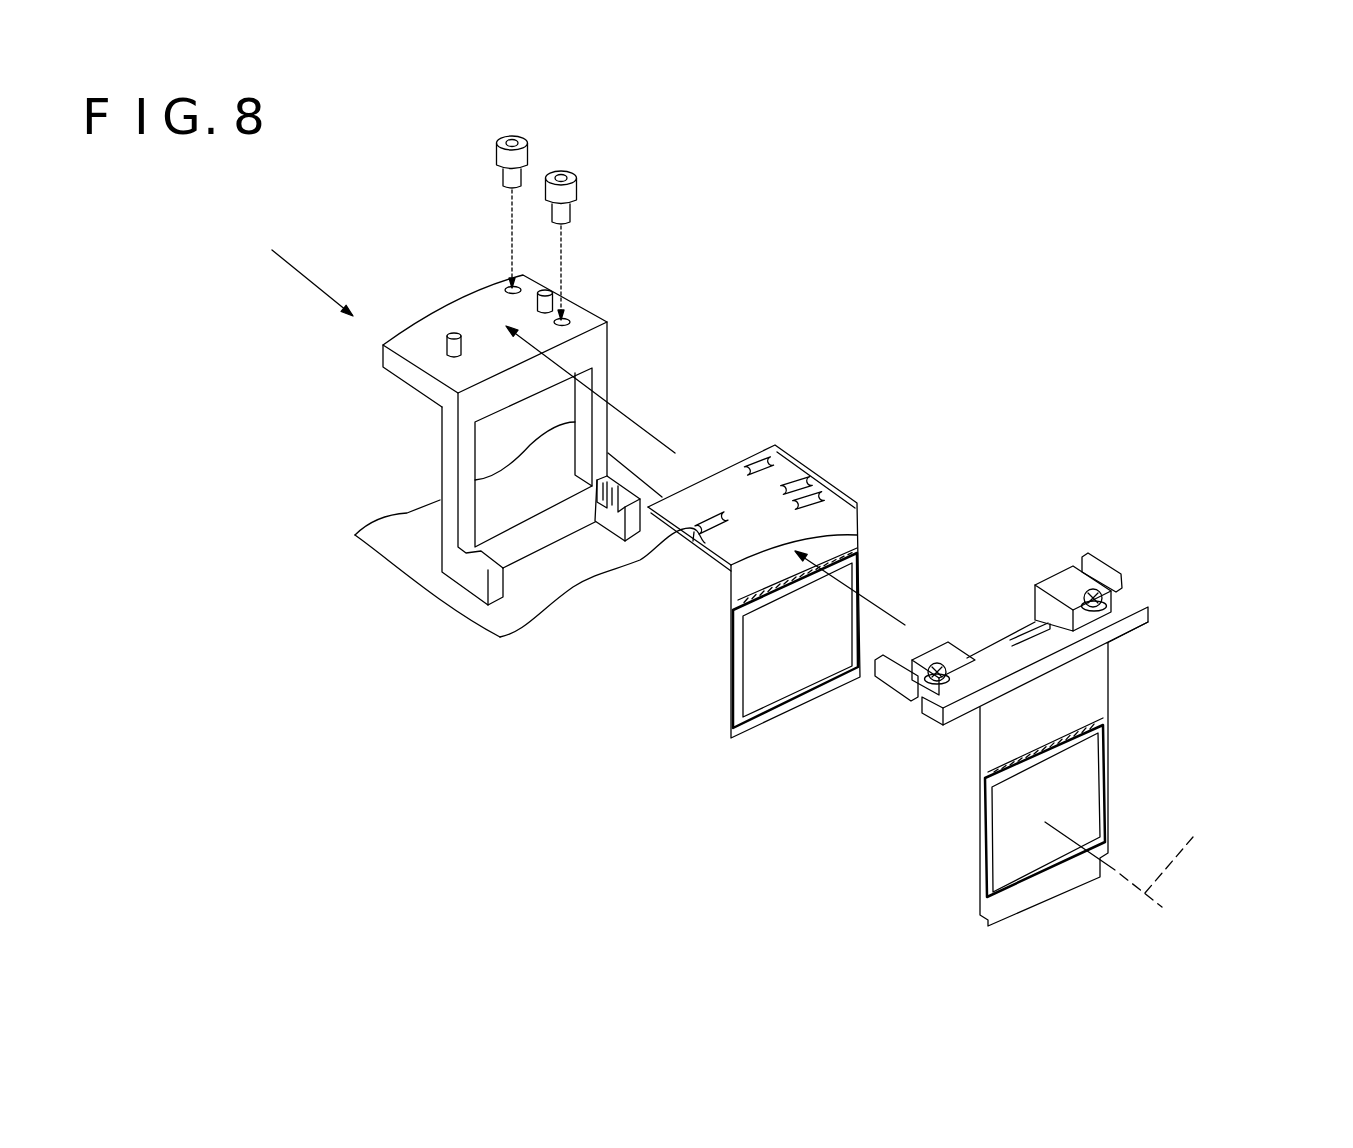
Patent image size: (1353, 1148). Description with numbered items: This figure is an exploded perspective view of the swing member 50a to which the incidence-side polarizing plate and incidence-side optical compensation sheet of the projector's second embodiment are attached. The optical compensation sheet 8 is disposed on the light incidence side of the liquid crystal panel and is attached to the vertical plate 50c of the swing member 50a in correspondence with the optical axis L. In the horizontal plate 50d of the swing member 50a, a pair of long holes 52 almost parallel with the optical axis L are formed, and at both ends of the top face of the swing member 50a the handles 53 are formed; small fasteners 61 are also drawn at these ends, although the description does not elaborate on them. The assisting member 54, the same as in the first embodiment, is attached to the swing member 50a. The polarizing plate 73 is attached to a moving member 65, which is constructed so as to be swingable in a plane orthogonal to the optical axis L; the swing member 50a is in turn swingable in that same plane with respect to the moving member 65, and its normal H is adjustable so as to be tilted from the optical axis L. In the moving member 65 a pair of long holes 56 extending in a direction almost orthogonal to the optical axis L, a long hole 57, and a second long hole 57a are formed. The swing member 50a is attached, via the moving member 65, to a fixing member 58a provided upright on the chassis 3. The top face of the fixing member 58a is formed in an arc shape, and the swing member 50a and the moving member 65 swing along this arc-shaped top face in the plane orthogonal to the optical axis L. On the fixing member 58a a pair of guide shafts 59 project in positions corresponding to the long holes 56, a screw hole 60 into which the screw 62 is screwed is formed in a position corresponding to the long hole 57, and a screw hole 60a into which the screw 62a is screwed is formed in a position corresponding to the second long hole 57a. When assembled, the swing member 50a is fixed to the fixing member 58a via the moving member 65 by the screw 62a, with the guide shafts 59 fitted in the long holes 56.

The chassis 3 is at (377, 530).
The optical compensation sheet 8 is at (1085, 787).
The swing member 50a is at (1072, 695).
The vertical plate 50c is at (1095, 676).
The horizontal plate 50d is at (1027, 624).
The long holes 52 is at (1068, 570).
The handles 53 is at (1117, 567).
The assisting member 54 is at (977, 652).
The long holes 56 is at (798, 478).
The long hole 57 is at (829, 494).
The second long hole 57a is at (755, 460).
The fixing member 58a is at (600, 347).
The guide shafts 59 is at (457, 337).
The screw hole 60 is at (575, 313).
The screw hole 60a is at (508, 278).
The screw 61 is at (1120, 602).
The screw 62 is at (578, 185).
The screw 62a is at (523, 138).
The moving member 65 is at (791, 541).
The polarizing plate 73 is at (845, 578).
The optical axis L is at (473, 351).
The normal H is at (1133, 861).